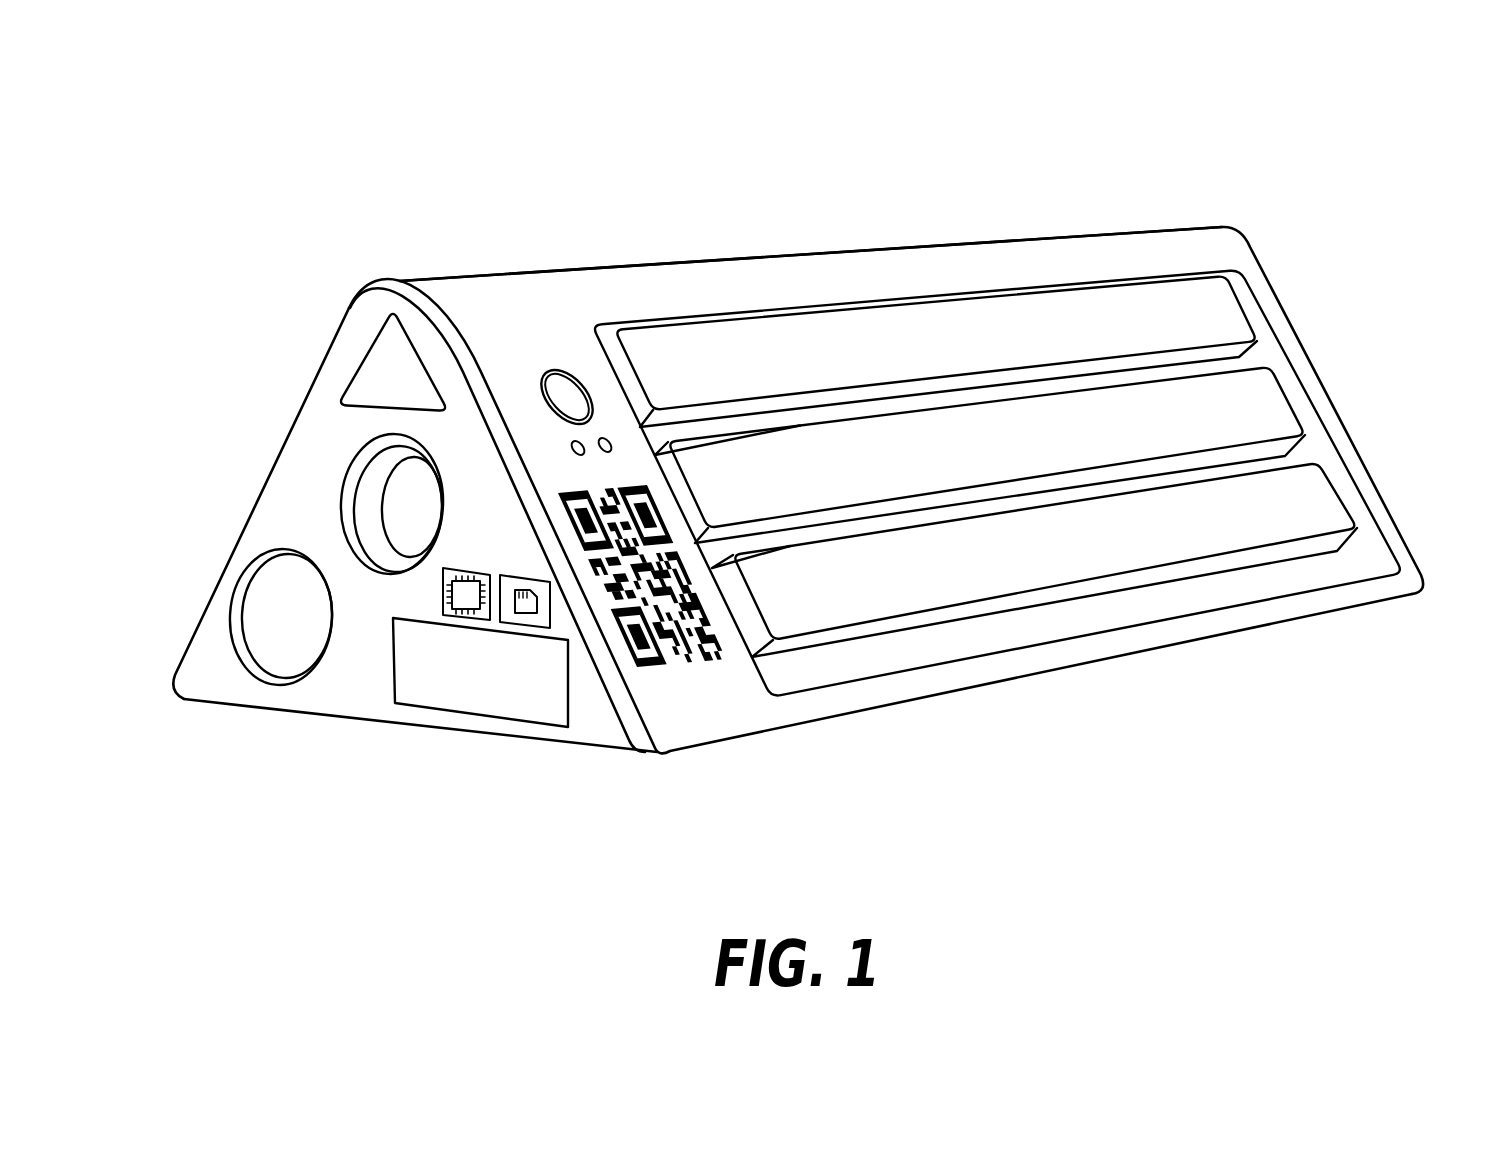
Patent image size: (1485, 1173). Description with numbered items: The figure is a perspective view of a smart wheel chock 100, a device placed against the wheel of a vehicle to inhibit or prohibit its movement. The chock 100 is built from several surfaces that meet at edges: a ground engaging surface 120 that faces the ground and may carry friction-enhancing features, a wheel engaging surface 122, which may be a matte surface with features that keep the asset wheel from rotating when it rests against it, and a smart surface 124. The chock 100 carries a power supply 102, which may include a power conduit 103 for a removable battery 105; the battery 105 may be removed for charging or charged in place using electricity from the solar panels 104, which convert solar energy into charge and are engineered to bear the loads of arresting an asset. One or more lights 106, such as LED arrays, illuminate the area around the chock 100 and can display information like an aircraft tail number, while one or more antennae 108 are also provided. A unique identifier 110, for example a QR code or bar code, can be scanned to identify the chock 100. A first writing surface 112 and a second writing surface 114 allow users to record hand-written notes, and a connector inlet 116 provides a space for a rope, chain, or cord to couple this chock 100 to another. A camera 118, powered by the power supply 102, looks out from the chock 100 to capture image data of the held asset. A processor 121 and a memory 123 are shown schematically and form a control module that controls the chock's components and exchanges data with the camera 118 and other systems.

The smart wheel chock 100 is at (1270, 155).
The power supply 102 is at (165, 735).
The power conduit 103 is at (170, 585).
The solar panels 104 is at (1224, 300).
The removable battery 105 is at (281, 580).
The lights 106 is at (1284, 404).
The antennae 108 is at (572, 445).
The unique identifier 110 is at (693, 663).
The first writing surface 112 is at (393, 357).
The second writing surface 114 is at (414, 697).
The connector inlet 116 is at (400, 520).
The camera 118 is at (564, 388).
The ground engaging surface 120 is at (945, 718).
The processor 121 is at (483, 621).
The wheel engaging surface 122 is at (258, 425).
The memory 123 is at (540, 632).
The smart surface 124 is at (862, 262).